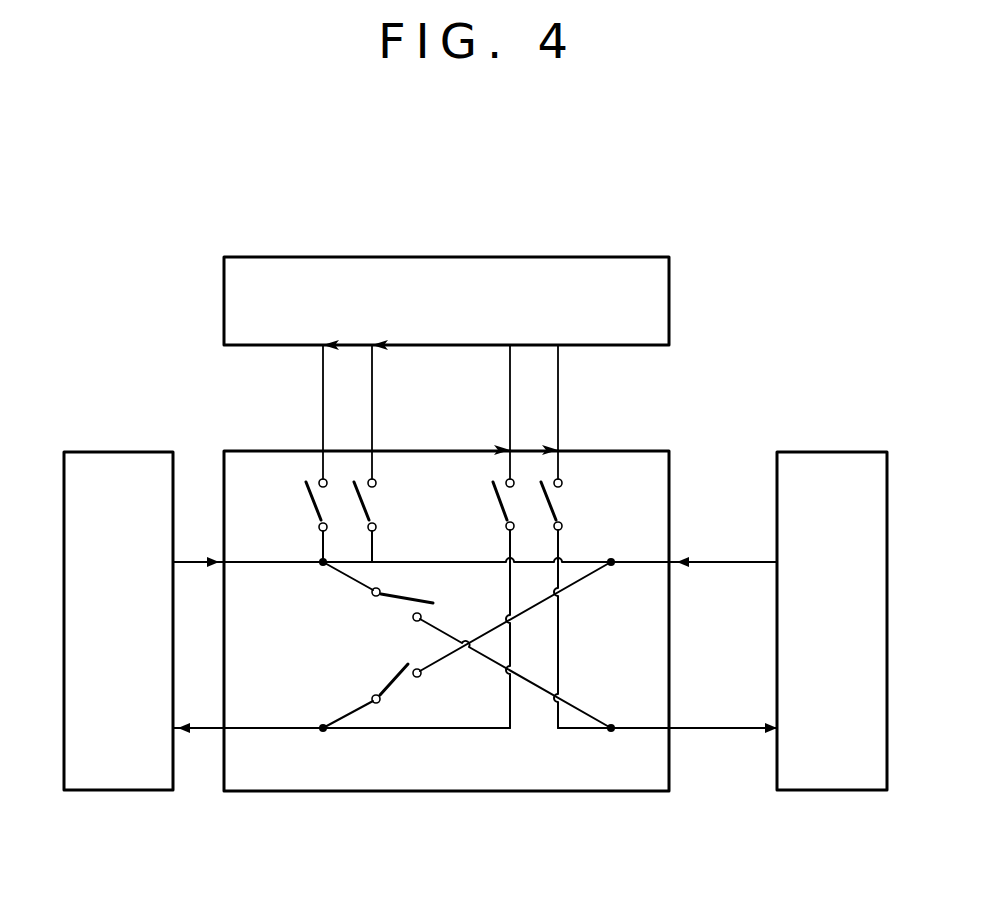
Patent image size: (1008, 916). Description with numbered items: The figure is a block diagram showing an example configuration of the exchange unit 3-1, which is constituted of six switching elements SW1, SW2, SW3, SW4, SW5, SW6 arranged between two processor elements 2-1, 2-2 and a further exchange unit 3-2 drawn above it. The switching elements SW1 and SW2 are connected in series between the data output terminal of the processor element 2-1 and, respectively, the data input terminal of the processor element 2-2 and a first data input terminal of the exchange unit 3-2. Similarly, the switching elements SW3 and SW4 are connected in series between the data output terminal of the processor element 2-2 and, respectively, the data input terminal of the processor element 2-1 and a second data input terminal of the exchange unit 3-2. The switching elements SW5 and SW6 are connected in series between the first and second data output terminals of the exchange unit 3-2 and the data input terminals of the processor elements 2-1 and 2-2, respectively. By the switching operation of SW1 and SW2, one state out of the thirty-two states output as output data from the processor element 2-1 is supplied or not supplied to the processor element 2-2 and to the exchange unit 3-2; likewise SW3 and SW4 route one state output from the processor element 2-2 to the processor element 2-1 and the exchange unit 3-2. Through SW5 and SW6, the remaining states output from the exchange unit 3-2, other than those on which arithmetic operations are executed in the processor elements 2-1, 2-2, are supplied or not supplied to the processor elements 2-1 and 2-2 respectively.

The processor element 2-1 is at (120, 452).
The processor element 2-2 is at (832, 452).
The exchange unit 3-1 is at (433, 791).
The exchange unit 3-2 is at (447, 257).
The switching element SW1 is at (467, 645).
The switching element SW2 is at (287, 505).
The switching element SW3 is at (467, 645).
The switching element SW4 is at (391, 505).
The switching element SW5 is at (476, 511).
The switching element SW6 is at (577, 504).